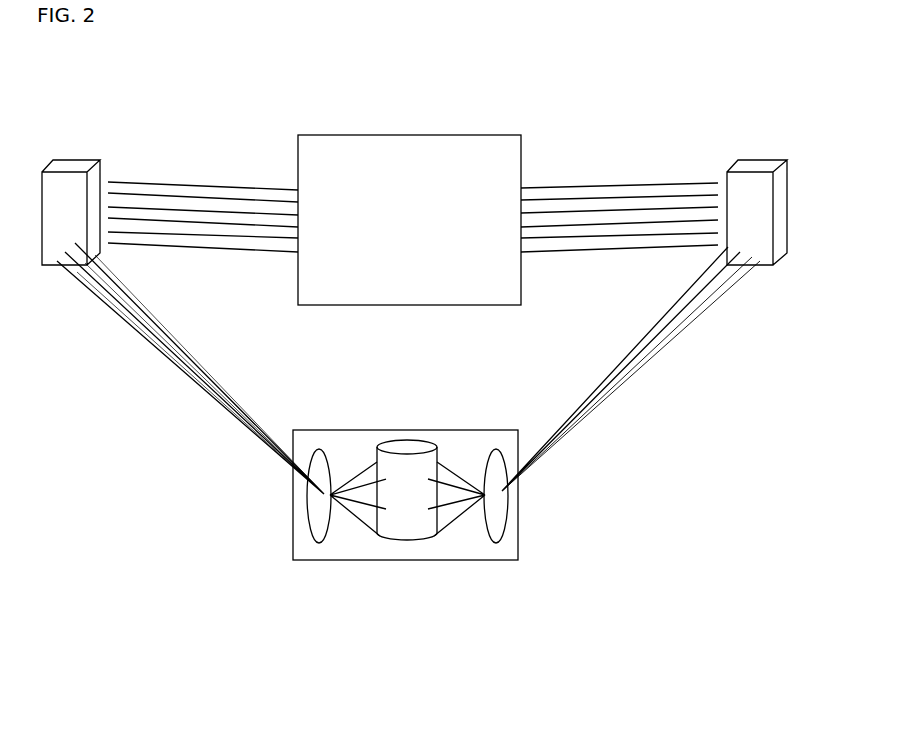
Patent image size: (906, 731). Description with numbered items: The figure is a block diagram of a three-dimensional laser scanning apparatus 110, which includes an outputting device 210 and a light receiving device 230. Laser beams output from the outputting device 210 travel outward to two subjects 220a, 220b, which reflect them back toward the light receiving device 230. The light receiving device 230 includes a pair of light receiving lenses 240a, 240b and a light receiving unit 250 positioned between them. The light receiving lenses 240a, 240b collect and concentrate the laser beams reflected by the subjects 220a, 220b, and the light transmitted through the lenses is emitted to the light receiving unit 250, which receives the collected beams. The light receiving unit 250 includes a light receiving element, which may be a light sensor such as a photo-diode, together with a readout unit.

The 3D laser scanning apparatus 110 is at (225, 65).
The outputting device 210 is at (524, 163).
The subject 220a is at (78, 158).
The subject 220b is at (758, 157).
The light receiving device 230 is at (333, 428).
The light receiving lens 240a is at (307, 521).
The light receiving lens 240b is at (505, 520).
The light receiving unit 250 is at (427, 442).